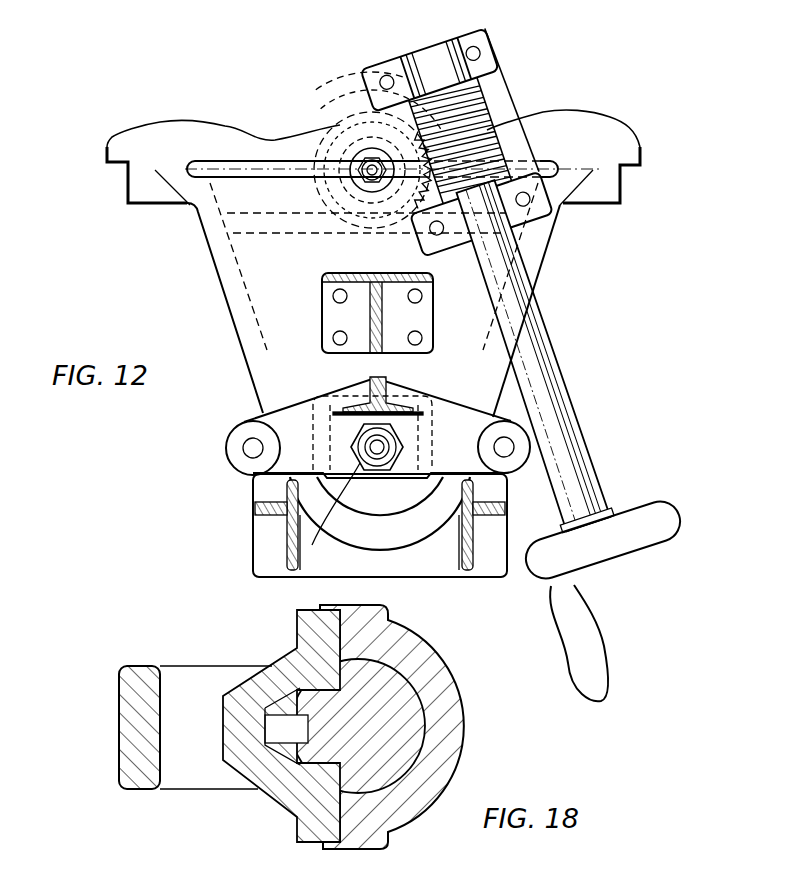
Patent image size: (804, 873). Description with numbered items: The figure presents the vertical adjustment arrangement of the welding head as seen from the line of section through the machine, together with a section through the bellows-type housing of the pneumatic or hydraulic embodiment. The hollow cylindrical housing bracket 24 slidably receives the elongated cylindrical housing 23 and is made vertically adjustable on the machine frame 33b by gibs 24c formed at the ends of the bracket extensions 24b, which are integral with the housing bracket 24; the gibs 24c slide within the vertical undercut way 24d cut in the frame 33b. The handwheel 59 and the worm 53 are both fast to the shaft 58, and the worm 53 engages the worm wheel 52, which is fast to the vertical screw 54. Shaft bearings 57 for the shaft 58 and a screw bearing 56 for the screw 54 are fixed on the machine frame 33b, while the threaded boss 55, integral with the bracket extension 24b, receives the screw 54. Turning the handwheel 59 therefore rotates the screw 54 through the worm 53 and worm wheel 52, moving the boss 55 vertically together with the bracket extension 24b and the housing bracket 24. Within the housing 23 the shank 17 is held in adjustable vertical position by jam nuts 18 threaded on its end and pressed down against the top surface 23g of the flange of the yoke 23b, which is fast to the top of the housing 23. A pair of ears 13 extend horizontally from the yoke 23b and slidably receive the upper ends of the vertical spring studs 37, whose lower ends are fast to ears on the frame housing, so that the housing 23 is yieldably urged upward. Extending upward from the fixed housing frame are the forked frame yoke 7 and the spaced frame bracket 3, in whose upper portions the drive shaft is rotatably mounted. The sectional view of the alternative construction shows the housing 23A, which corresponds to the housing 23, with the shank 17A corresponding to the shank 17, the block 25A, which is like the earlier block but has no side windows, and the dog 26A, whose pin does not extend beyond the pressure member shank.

In FIG. 12, the frame bracket 3 is at (366, 273).
In FIG. 12, the forked frame yoke 7 is at (288, 517).
In FIG. 12, the ears 13 is at (310, 405).
In FIG. 12, the shank 17 is at (430, 416).
In FIG. 12, the jam nuts 18 is at (400, 453).
In FIG. 12, the housing 23 is at (358, 511).
In FIG. 12, the yoke 23b is at (398, 412).
In FIG. 12, the top surface of flange 23g is at (331, 514).
In FIG. 12, the housing bracket 24 is at (405, 545).
In FIG. 12, the bracket extensions 24b is at (243, 293).
In FIG. 12, the gibs 24c is at (155, 175).
In FIG. 12, the vertical undercut way 24d is at (585, 152).
In FIG. 12, the machine frame 33b is at (133, 200).
In FIG. 12, the vertical spring studs 37 is at (250, 447).
In FIG. 12, the worm wheel 52 is at (312, 127).
In FIG. 12, the worm 53 is at (478, 120).
In FIG. 12, the vertical screw 54 is at (332, 162).
In FIG. 12, the threaded boss 55 is at (348, 82).
In FIG. 12, the screw bearing 56 is at (330, 104).
In FIG. 12, the shaft bearings 57 is at (440, 55).
In FIG. 12, the shaft 58 is at (543, 375).
In FIG. 12, the handwheel 59 is at (652, 537).
In FIG. 18, the shank 17A is at (417, 703).
In FIG. 18, the housing 23A is at (427, 655).
In FIG. 18, the block 25A is at (287, 660).
In FIG. 18, the dog 26A is at (308, 733).